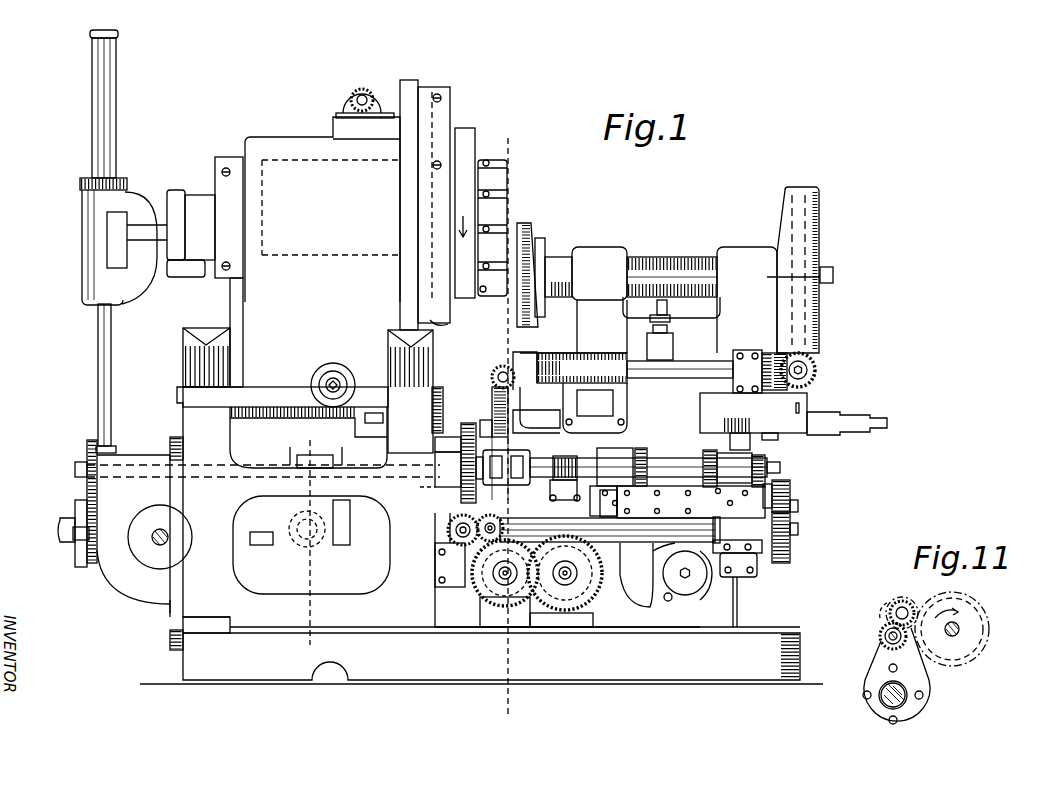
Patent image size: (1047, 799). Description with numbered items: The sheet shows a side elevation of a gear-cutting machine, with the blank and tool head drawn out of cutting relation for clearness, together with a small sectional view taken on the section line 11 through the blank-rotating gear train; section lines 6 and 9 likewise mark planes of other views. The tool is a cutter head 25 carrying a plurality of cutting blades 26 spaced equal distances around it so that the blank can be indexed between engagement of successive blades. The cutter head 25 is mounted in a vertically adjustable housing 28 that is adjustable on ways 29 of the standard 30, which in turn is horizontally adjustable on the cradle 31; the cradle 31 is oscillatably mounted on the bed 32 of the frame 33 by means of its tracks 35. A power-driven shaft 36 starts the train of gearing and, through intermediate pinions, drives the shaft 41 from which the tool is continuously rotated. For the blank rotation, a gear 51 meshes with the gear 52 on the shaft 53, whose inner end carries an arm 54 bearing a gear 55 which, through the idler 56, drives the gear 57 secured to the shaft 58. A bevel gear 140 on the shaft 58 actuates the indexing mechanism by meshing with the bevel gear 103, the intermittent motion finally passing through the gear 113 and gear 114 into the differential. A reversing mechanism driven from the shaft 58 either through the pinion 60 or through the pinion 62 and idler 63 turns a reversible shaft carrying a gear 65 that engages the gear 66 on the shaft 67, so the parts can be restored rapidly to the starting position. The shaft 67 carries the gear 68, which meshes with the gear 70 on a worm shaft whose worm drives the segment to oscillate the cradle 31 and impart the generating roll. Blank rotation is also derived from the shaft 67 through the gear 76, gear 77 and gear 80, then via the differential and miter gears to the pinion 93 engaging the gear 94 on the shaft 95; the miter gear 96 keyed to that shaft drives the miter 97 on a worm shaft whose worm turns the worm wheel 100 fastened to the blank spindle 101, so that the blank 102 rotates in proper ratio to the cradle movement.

In FIG. 1, the section line 6- 6 is at (330, 511).
In FIG. 1, the section line 9- 9 is at (507, 429).
In FIG. 1, the section line 11 is at (494, 400).
In FIG. 1, the cutter head 25 is at (470, 152).
In FIG. 1, the cutting blades 26 is at (506, 190).
In FIG. 1, the housing 28 is at (450, 100).
In FIG. 1, the ways 29 is at (415, 82).
In FIG. 1, the standard 30 is at (440, 324).
In FIG. 1, the cradle 31 is at (441, 395).
In FIG. 1, the bed 32 is at (180, 418).
In FIG. 1, the frame 33 is at (265, 671).
In FIG. 1, the tracks 35 is at (425, 354).
In FIG. 1, the shaft 36 is at (168, 535).
In FIG. 1, the shaft 41 is at (100, 354).
In FIG. 1, the gear 51 is at (92, 567).
In FIG. 1, the gear 52 is at (88, 450).
In FIG. 1, the shaft 53 is at (223, 478).
In FIG. 11, the shaft 53 is at (886, 644).
In FIG. 1, the arm 54 is at (467, 428).
In FIG. 11, the arm 54 is at (889, 613).
In FIG. 1, the gear 55 is at (437, 466).
In FIG. 11, the gear 55 is at (886, 635).
In FIG. 1, the idler 56 is at (436, 444).
In FIG. 11, the idler 56 is at (911, 606).
In FIG. 1, the gear 57 is at (432, 488).
In FIG. 11, the gear 57 is at (990, 640).
In FIG. 1, the shaft 58 is at (575, 462).
In FIG. 11, the shaft 58 is at (958, 626).
In FIG. 1, the pinion 60 is at (630, 452).
In FIG. 1, the pinion 62 is at (700, 451).
In FIG. 1, the idler 63 is at (684, 498).
In FIG. 1, the gear 65 is at (790, 486).
In FIG. 1, the gear 66 is at (790, 546).
In FIG. 1, the shaft 67 is at (656, 578).
In FIG. 11, the shaft 67 is at (905, 700).
In FIG. 1, the gear 68 is at (343, 547).
In FIG. 1, the gear 70 is at (311, 548).
In FIG. 1, the gear 76 is at (435, 546).
In FIG. 1, the gear 77 is at (502, 521).
In FIG. 1, the gear 80 is at (520, 601).
In FIG. 1, the pinion 93 is at (501, 372).
In FIG. 1, the gear 94 is at (522, 360).
In FIG. 1, the shaft 95 is at (725, 378).
In FIG. 1, the miter gear 96 is at (783, 385).
In FIG. 1, the miter gear 97 is at (815, 371).
In FIG. 1, the worm wheel 100 is at (808, 228).
In FIG. 1, the blank spindle 101 is at (672, 263).
In FIG. 1, the blank 102 is at (528, 230).
In FIG. 1, the bevel gear 103 is at (585, 484).
In FIG. 1, the gear 113 is at (590, 599).
In FIG. 1, the gear 114 is at (532, 521).
In FIG. 1, the bevel gear 140 is at (567, 440).